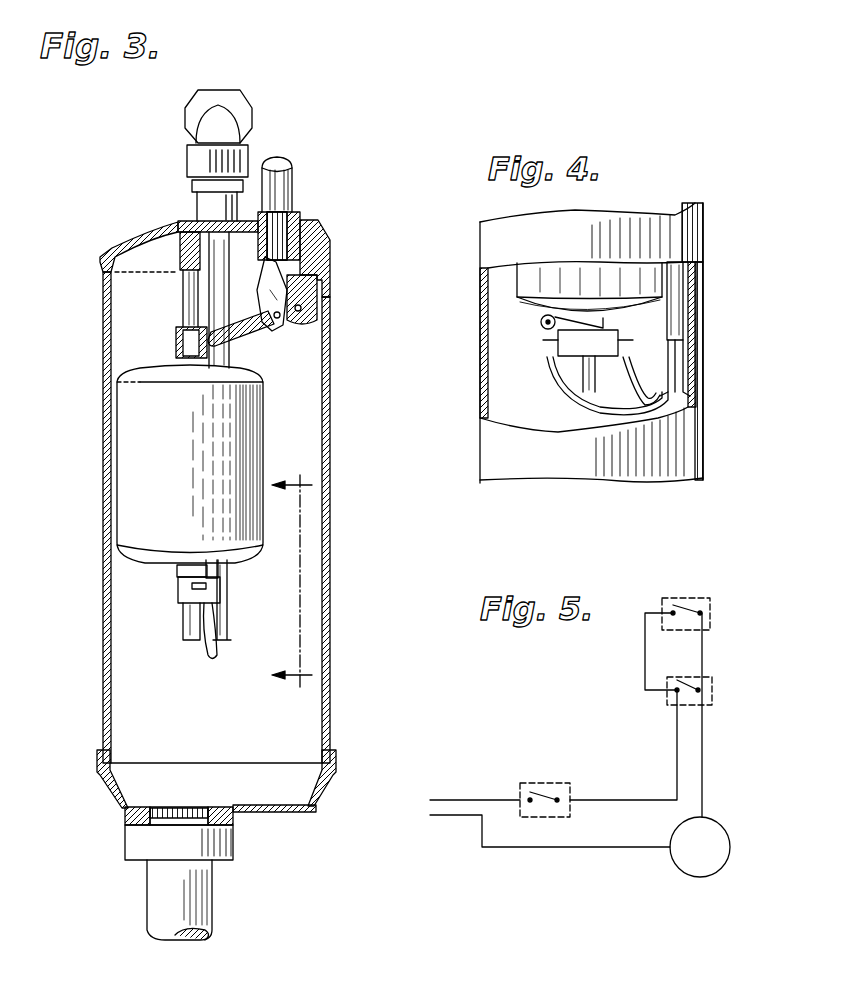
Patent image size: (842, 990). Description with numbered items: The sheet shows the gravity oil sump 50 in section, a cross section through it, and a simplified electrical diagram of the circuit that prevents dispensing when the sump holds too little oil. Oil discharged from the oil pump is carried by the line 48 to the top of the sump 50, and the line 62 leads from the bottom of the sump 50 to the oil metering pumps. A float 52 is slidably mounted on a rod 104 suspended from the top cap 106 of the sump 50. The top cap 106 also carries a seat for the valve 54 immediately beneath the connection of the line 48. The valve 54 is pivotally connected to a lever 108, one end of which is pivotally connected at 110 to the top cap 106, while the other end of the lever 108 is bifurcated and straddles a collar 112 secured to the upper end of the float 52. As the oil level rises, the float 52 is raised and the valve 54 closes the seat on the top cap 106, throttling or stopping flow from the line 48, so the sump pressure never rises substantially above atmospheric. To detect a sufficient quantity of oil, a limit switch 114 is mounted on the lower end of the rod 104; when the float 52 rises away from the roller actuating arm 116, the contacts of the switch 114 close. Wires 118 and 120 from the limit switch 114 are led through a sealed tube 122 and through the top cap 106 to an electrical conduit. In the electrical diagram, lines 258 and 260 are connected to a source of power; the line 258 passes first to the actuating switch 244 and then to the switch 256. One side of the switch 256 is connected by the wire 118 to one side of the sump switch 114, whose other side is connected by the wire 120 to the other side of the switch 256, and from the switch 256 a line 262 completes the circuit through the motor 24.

In FIG. 5, the motor 24 is at (690, 875).
In FIG. 3, the line 48 is at (292, 180).
In FIG. 3, the sump 50 is at (330, 497).
In FIG. 4, the sump 50 is at (703, 238).
In FIG. 3, the float 52 is at (263, 425).
In FIG. 4, the float 52 is at (510, 288).
In FIG. 3, the valve 54 is at (262, 275).
In FIG. 3, the line 62 is at (212, 915).
In FIG. 3, the rod 104 is at (183, 296).
In FIG. 4, the rod 104 is at (580, 380).
In FIG. 3, the top cap 106 is at (165, 240).
In FIG. 3, the lever 108 is at (243, 340).
In FIG. 3, the pivotal connection 110 is at (312, 317).
In FIG. 3, the collar 112 is at (176, 335).
In FIG. 3, the limit switch 114 is at (218, 585).
In FIG. 4, the limit switch 114 is at (552, 345).
In FIG. 5, the limit switch 114 is at (710, 602).
In FIG. 3, the roller actuating arm 116 is at (210, 563).
In FIG. 4, the roller actuating arm 116 is at (541, 325).
In FIG. 4, the wire 118 is at (590, 387).
In FIG. 5, the wire 118 is at (645, 647).
In FIG. 3, the wire 120 is at (218, 653).
In FIG. 4, the wire 120 is at (625, 365).
In FIG. 5, the wire 120 is at (702, 640).
In FIG. 3, the sealed tube 122 is at (227, 592).
In FIG. 4, the sealed tube 122 is at (660, 332).
In FIG. 5, the actuating switch 244 is at (545, 782).
In FIG. 5, the switch 256 is at (712, 690).
In FIG. 5, the line 258 is at (440, 798).
In FIG. 5, the line 260 is at (450, 815).
In FIG. 5, the line 262 is at (702, 757).